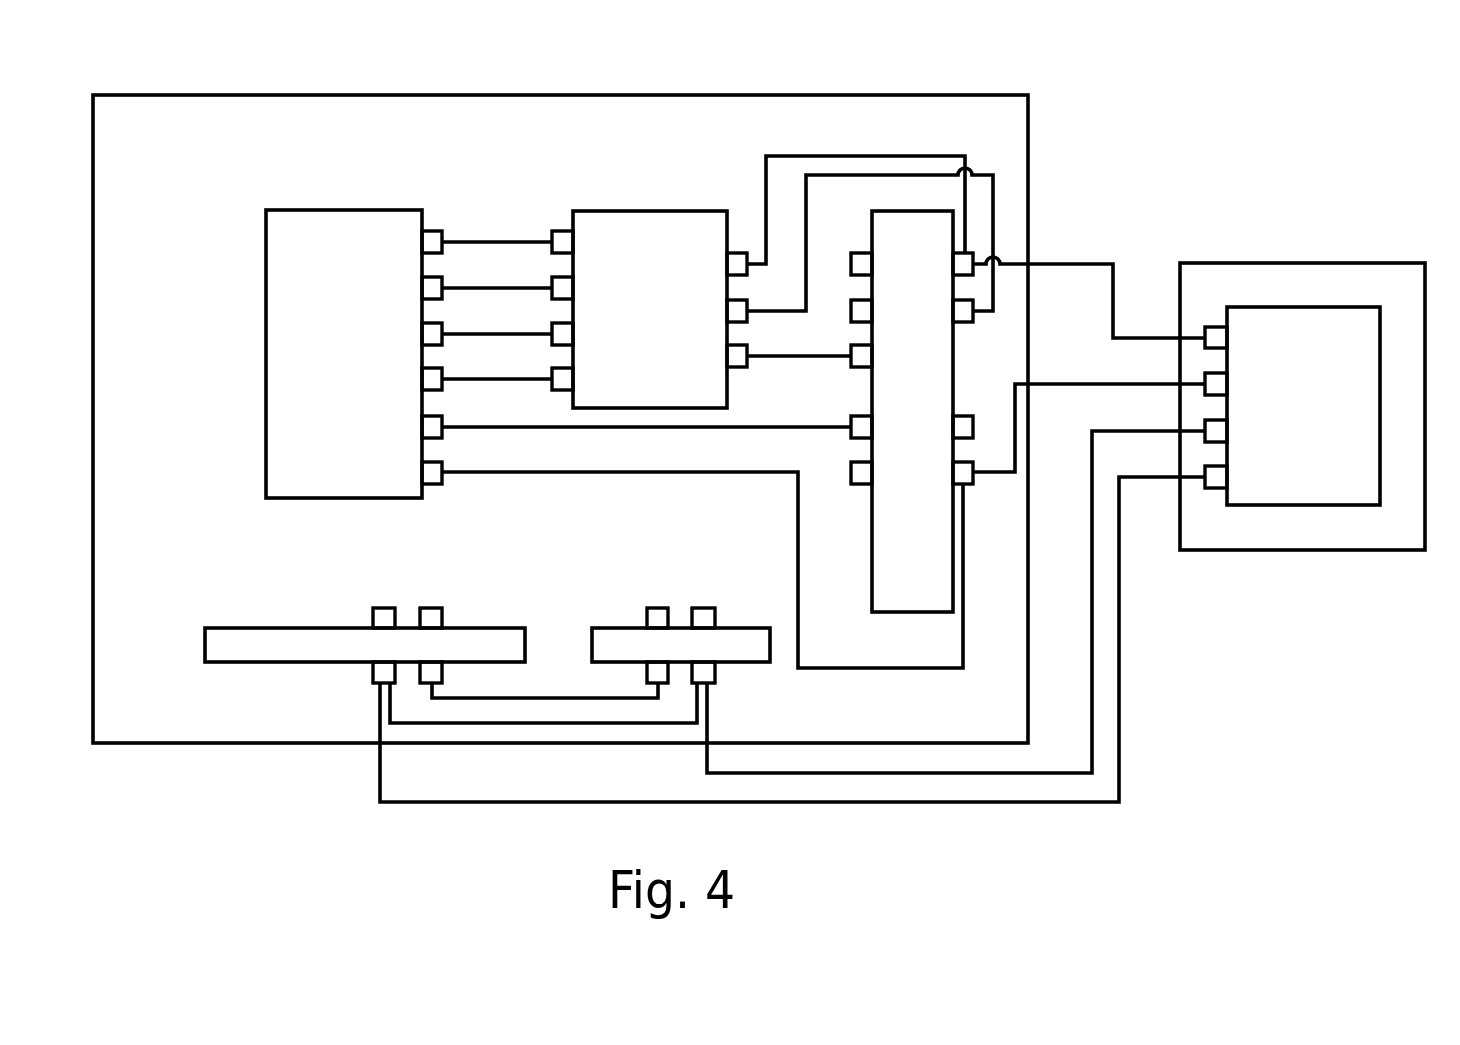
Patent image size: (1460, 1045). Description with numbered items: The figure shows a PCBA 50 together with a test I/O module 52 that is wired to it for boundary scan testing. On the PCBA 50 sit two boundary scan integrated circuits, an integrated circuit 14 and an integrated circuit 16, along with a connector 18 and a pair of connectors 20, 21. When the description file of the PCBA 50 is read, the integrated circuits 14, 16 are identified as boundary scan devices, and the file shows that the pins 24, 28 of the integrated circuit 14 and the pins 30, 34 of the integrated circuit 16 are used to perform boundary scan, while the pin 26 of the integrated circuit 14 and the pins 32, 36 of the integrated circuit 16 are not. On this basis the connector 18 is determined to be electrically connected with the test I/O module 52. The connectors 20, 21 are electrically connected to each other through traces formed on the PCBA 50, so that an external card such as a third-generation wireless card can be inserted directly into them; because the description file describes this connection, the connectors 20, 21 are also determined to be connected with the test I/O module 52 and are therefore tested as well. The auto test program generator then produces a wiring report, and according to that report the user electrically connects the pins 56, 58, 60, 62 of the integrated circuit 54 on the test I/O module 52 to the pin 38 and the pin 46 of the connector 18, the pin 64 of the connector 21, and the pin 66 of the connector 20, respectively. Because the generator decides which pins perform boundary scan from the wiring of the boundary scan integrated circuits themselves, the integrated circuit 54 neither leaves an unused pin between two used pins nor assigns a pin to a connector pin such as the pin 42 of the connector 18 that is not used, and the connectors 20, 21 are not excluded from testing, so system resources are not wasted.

The PCBA 50 is at (955, 93).
The integrated circuit 14 is at (353, 363).
The integrated circuit 16 is at (663, 323).
The connector 18 is at (930, 406).
The connector 20 is at (282, 650).
The connector 21 is at (615, 650).
The pin 24 is at (433, 240).
The pin 26 is at (432, 288).
The pin 28 is at (430, 477).
The pin 30 is at (562, 242).
The pin 32 is at (560, 288).
The pin 34 is at (740, 264).
The pin 36 is at (738, 312).
The pin 38 is at (965, 265).
The pin 42 is at (963, 310).
The pin 46 is at (963, 475).
The test I/O module 52 is at (1377, 263).
The integrated circuit 54 is at (1322, 414).
The pin 56 is at (1213, 335).
The pin 58 is at (1210, 380).
The pin 60 is at (1212, 435).
The pin 62 is at (1215, 483).
The pin 64 is at (698, 677).
The pin 66 is at (376, 680).